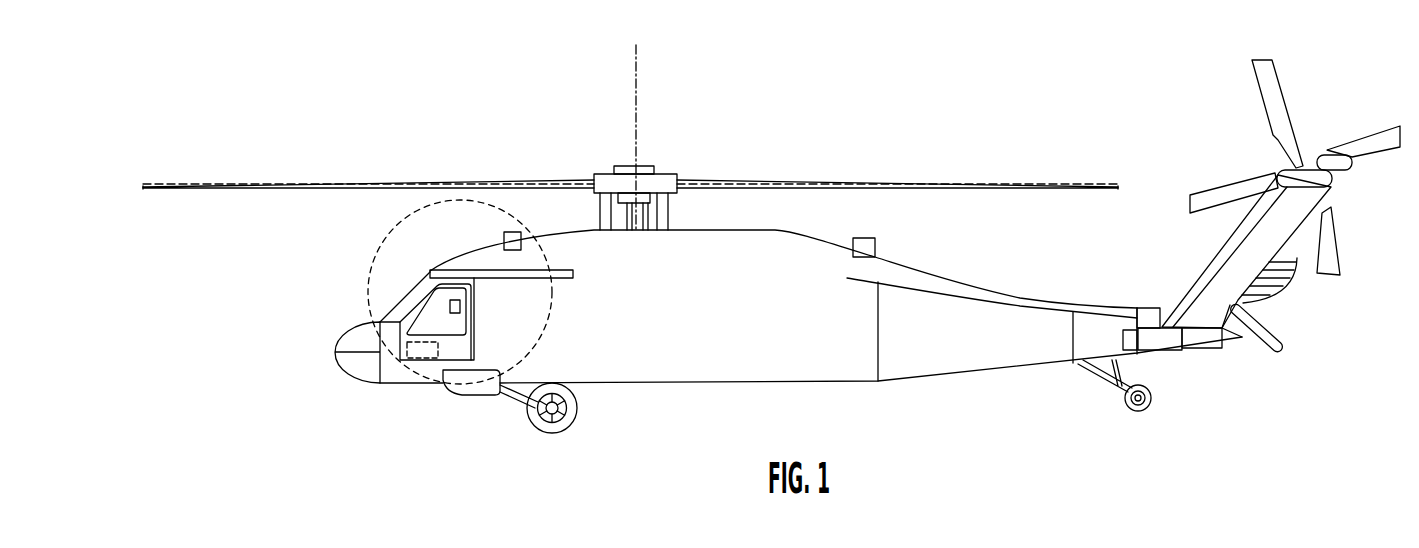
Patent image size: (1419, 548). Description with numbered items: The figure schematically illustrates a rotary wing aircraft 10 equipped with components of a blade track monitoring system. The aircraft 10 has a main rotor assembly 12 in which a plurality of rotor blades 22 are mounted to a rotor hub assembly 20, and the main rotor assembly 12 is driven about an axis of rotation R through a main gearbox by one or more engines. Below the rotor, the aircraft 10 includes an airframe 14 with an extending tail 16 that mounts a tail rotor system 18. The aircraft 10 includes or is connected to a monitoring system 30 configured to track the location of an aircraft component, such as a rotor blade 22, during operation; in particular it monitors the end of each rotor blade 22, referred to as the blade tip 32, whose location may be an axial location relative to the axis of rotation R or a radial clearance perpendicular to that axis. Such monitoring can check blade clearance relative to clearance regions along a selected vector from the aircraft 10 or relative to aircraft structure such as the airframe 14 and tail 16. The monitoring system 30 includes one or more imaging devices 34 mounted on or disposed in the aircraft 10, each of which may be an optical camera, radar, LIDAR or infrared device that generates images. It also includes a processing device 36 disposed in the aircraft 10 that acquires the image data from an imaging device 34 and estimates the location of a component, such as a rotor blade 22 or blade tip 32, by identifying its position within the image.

The rotary wing aircraft 10 is at (281, 63).
The main rotor assembly 12 is at (722, 109).
The airframe 14 is at (722, 366).
The tail 16 is at (1037, 352).
The tail rotor system 18 is at (1196, 121).
The rotor hub assembly 20 is at (606, 173).
The rotor blades 22 is at (440, 182).
The monitoring system 30 is at (327, 250).
The blade tip 32 is at (146, 186).
The imaging device 34 is at (509, 232).
The processing device 36 is at (414, 358).
The axis of rotation R is at (638, 78).